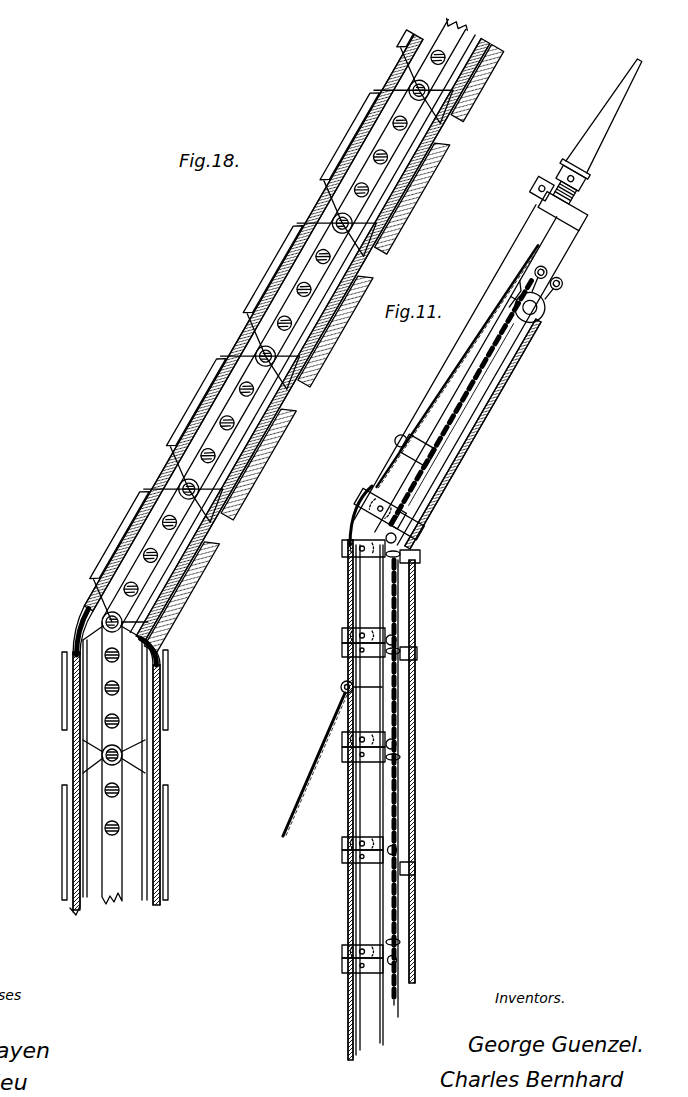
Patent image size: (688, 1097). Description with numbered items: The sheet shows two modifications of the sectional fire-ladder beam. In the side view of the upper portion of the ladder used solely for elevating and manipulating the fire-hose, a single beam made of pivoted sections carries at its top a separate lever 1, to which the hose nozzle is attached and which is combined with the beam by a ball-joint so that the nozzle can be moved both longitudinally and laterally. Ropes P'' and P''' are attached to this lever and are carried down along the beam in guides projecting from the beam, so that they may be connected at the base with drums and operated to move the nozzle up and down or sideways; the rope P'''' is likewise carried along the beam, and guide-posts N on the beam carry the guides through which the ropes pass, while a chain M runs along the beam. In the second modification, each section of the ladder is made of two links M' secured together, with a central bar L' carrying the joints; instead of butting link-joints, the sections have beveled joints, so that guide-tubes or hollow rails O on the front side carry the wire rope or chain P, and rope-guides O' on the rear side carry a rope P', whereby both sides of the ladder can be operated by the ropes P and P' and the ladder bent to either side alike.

In FIG. 18, the central bar L' is at (283, 459).
In FIG. 18, the link M' is at (282, 452).
In FIG. 11, the link M' is at (450, 638).
In FIG. 18, the wire rope or chain P is at (238, 474).
In FIG. 18, the rope P' is at (313, 471).
In FIG. 18, the guide-tube or hollow rail O is at (228, 465).
In FIG. 18, the rope-guide O' is at (323, 472).
In FIG. 11, the lever 1 is at (511, 550).
In FIG. 11, the guide-post or baluster N is at (391, 700).
In FIG. 11, the chain end M is at (404, 788).
In FIG. 11, the rope P'' is at (456, 572).
In FIG. 11, the rope P''' is at (433, 648).
In FIG. 11, the right guy cable P'''' is at (439, 651).